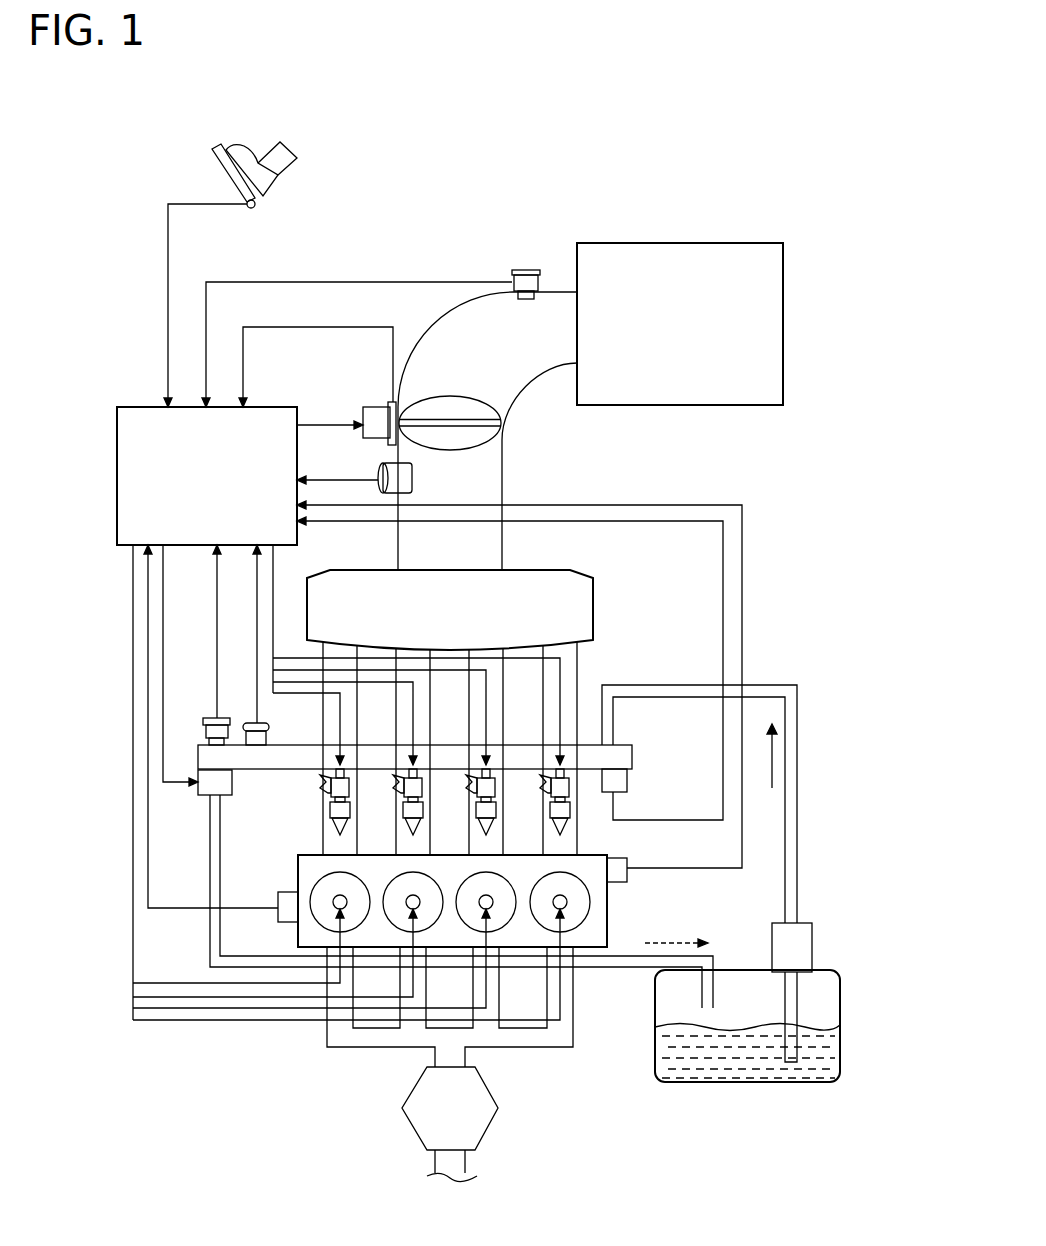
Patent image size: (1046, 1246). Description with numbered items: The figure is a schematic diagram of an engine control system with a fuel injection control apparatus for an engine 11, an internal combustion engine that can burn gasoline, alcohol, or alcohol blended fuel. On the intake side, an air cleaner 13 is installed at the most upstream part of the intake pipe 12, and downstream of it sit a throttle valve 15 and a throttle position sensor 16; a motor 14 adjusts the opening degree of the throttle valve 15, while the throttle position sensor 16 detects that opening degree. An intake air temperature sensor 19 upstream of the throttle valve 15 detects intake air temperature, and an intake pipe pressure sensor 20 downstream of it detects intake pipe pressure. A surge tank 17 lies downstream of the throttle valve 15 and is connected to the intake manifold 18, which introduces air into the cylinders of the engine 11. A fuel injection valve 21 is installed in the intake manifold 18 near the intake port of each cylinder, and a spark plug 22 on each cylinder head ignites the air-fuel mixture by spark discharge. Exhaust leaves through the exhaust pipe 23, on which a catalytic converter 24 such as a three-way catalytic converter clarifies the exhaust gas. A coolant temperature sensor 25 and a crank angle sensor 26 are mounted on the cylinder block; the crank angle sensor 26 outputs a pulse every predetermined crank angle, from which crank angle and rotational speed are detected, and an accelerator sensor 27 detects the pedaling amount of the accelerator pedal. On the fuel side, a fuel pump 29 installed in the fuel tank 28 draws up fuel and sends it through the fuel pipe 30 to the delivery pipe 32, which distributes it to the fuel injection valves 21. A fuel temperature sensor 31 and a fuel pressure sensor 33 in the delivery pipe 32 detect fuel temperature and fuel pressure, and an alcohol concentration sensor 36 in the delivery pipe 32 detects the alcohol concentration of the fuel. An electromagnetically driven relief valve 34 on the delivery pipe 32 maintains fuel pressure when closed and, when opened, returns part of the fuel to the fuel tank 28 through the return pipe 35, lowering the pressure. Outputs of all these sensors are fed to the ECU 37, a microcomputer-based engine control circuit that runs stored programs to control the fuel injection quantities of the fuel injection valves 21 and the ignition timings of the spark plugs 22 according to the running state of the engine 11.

The engine 11 is at (620, 926).
The intake pipe 12 is at (503, 480).
The air cleaner 13 is at (703, 243).
The motor 14 is at (362, 416).
The throttle valve 15 is at (477, 447).
The throttle position sensor 16 is at (389, 403).
The surge tank 17 is at (593, 608).
The intake manifold 18 is at (577, 662).
The intake air temperature sensor 19 is at (521, 269).
The intake pipe pressure sensor 20 is at (379, 472).
The fuel injection valve 21 is at (322, 800).
The spark plug 22 is at (333, 906).
The exhaust pipe 23 is at (467, 1055).
The catalytic converter 24 is at (490, 1128).
The coolant temperature sensor 25 is at (628, 860).
The crank angle sensor 26 is at (278, 902).
The accelerator sensor 27 is at (254, 208).
The fuel tank 28 is at (742, 1082).
The fuel pump 29 is at (812, 945).
The fuel pipe 30 is at (797, 765).
The fuel temperature sensor 31 is at (257, 712).
The delivery pipe 32 is at (632, 757).
The fuel pressure sensor 33 is at (216, 712).
The relief valve 34 is at (200, 797).
The return pipe 35 is at (209, 935).
The alcohol concentration sensor 36 is at (627, 780).
The ECU 37 is at (117, 470).